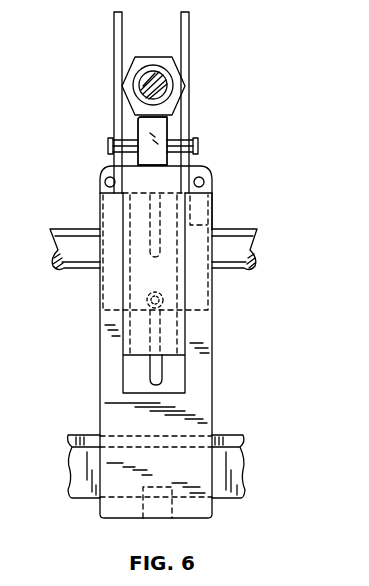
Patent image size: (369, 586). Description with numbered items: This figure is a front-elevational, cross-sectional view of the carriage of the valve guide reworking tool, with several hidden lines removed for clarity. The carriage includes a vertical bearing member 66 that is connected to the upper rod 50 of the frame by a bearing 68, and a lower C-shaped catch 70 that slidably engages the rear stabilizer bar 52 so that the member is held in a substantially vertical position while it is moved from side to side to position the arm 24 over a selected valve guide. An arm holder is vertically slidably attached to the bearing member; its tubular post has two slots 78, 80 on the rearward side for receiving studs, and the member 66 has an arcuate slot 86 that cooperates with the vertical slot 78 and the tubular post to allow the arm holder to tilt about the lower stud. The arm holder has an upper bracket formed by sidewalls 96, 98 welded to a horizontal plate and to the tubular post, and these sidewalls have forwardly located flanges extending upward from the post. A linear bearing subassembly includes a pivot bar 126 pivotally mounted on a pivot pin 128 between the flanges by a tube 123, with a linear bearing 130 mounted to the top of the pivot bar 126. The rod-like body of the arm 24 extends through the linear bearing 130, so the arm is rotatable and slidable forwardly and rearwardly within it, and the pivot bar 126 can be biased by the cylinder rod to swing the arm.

The arm 24 is at (157, 73).
The rod 50 is at (252, 240).
The stabilizer bar 52 is at (78, 462).
The vertical bearing member 66 is at (212, 403).
The bearing 68 is at (218, 286).
The C-shaped catch 70 is at (158, 482).
The slot 78 is at (213, 212).
The slot 80 is at (163, 376).
The arcuate slot 86 is at (205, 184).
The sidewall 96 is at (189, 45).
The sidewall 98 is at (113, 36).
The tube 123 is at (176, 135).
The pivot bar 126 is at (143, 133).
The pivot pin 128 is at (198, 144).
The linear bearing 130 is at (131, 68).